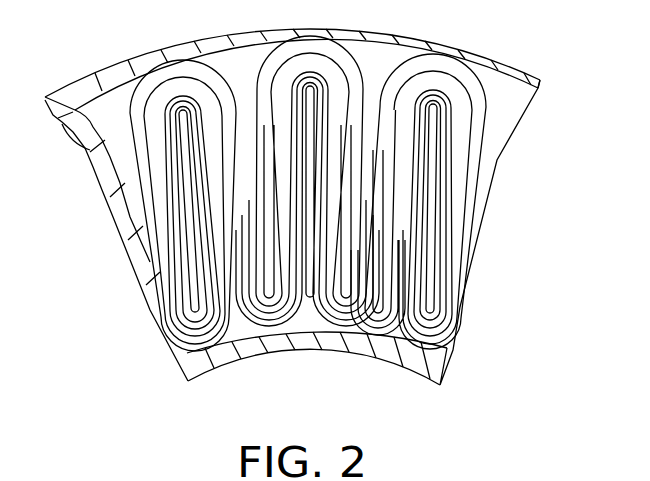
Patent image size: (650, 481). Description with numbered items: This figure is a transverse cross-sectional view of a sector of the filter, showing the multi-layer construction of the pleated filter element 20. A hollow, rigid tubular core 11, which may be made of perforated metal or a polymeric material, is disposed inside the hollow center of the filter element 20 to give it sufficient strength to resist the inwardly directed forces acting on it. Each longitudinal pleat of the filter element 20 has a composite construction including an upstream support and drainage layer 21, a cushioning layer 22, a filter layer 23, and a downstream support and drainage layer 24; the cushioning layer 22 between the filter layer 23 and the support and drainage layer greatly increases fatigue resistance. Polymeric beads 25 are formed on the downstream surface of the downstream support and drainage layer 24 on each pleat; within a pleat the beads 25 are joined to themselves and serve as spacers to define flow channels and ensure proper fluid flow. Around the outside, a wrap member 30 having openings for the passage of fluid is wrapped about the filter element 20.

The core 11 is at (309, 339).
The filter element 20 is at (226, 64).
The upstream support and drainage layer 21 is at (490, 113).
The cushioning layer 22 is at (447, 163).
The filter layer 23 is at (420, 250).
The downstream support and drainage layer 24 is at (450, 153).
The polymeric beads 25 is at (433, 197).
The wrap member 30 is at (404, 36).